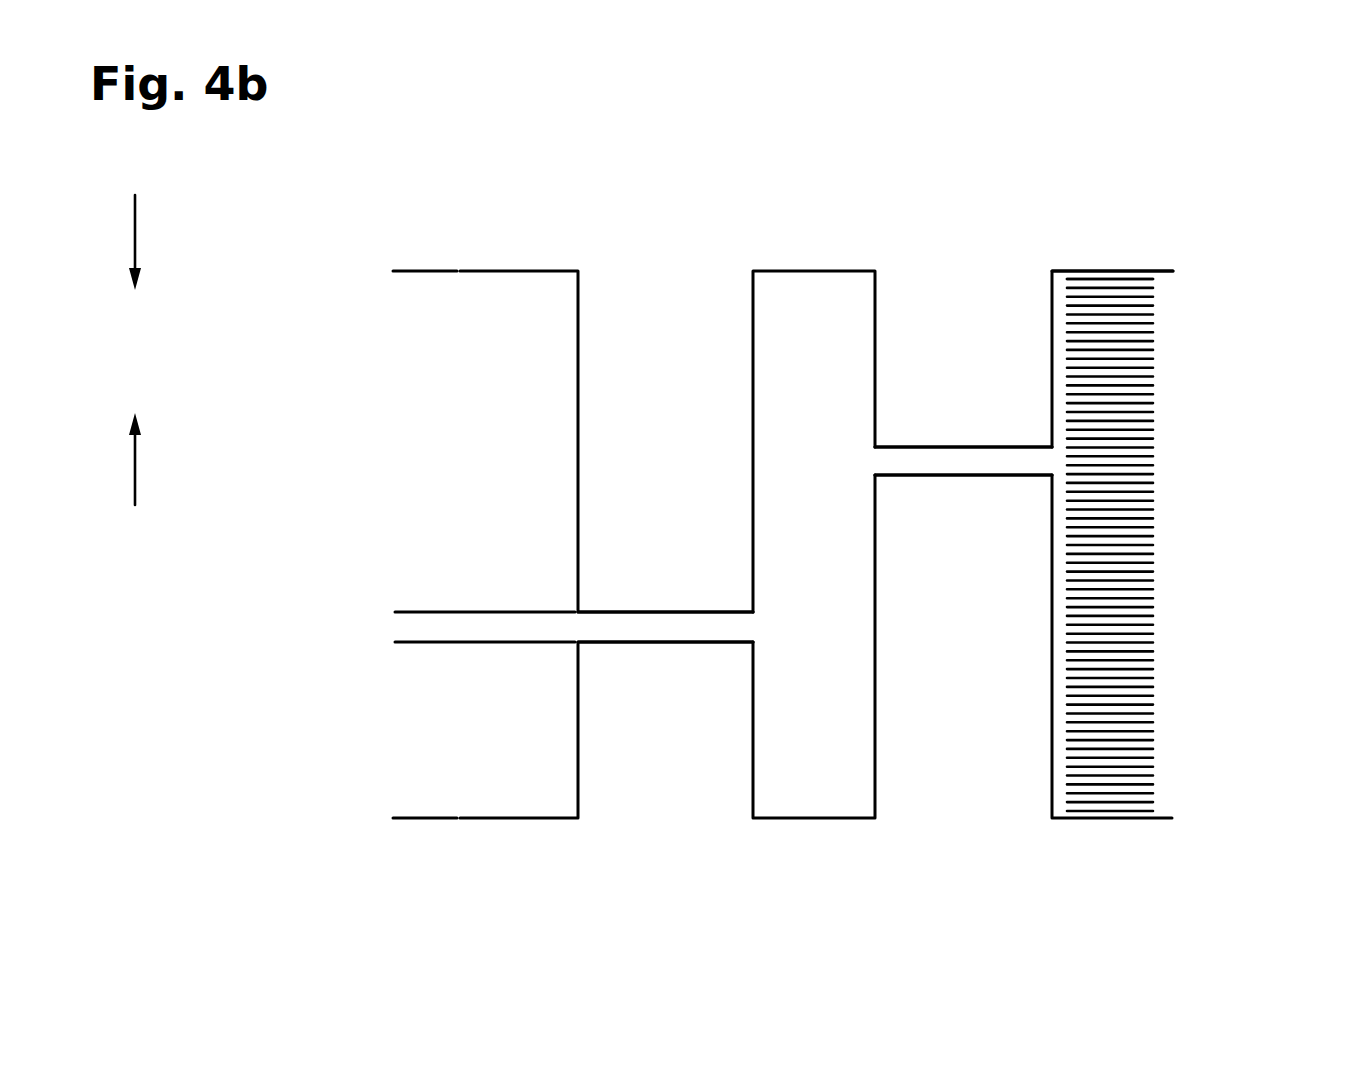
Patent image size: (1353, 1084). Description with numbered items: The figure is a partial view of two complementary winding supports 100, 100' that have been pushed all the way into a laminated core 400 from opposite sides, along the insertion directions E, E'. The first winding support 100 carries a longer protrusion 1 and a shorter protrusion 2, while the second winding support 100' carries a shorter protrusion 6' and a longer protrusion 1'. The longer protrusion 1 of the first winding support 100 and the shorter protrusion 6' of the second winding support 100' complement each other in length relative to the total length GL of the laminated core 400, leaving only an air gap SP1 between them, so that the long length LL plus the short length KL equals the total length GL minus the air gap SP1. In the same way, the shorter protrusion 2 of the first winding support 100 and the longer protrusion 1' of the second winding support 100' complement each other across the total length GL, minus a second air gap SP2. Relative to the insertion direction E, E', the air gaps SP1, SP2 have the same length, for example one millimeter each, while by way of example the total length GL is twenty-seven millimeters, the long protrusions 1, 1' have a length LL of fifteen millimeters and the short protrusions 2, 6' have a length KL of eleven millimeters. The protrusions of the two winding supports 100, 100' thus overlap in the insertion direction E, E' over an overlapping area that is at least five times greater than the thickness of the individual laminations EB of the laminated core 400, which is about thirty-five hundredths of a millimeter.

The longer protrusion 1 is at (573, 400).
The longer protrusion 1' is at (963, 671).
The shorter protrusion 2 is at (924, 310).
The shorter protrusion 6' is at (573, 769).
The first winding support 100 is at (1160, 173).
The second winding support 100' is at (318, 604).
The laminated core 400 is at (1174, 347).
The individual laminations EB is at (1153, 460).
The total length GL is at (1182, 271).
The length of the short protrusions KL is at (393, 642).
The length of the long protrusions LL is at (393, 271).
The air gap SP1 is at (592, 627).
The air gap SP2 is at (990, 458).
The insertion direction E is at (171, 242).
The insertion direction E' is at (174, 459).